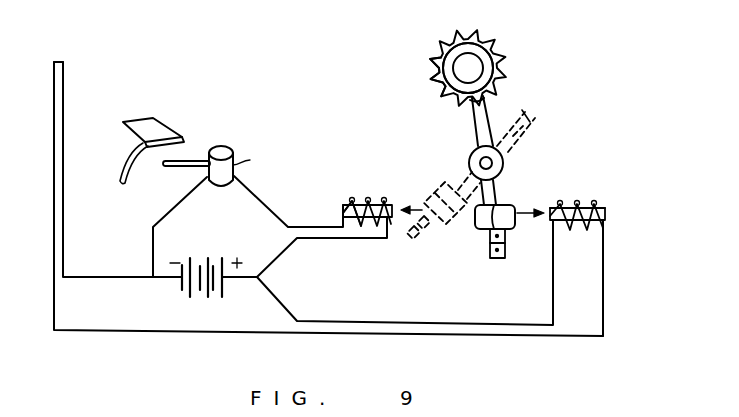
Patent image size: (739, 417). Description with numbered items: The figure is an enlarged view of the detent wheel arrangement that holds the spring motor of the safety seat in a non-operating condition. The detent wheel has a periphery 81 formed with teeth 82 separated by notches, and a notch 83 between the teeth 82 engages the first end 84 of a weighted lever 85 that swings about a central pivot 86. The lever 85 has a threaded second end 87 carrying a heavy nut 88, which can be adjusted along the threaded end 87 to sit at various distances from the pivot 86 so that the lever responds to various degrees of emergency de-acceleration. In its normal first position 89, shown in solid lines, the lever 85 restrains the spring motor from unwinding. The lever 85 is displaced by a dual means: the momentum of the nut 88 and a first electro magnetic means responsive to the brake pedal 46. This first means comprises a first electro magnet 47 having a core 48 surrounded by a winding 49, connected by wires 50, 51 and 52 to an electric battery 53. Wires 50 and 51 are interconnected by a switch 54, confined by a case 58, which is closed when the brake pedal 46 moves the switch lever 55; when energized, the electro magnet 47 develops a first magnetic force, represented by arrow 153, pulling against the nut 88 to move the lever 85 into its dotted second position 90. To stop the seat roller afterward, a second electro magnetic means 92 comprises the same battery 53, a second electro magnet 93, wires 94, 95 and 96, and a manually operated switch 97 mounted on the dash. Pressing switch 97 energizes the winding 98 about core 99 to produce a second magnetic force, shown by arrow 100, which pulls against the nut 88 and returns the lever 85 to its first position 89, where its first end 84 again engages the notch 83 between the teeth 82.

The brake pedal 46 is at (165, 120).
The first electro magnet 47 is at (370, 203).
The core 48 is at (342, 212).
The winding 49 is at (351, 200).
The wire 50 is at (259, 201).
The wire 51 is at (153, 243).
The wire 52 is at (291, 247).
The electric battery 53 is at (184, 298).
The switch 54 is at (214, 150).
The switch lever 55 is at (190, 167).
The case 58 is at (250, 160).
The periphery 81 is at (475, 31).
The teeth 82 is at (434, 62).
The notch 83 is at (497, 46).
The first end 84 is at (527, 104).
The weighted lever 85 is at (471, 116).
The central pivot 86 is at (471, 163).
The threaded second end 87 is at (492, 248).
The heavy nut 88 is at (507, 204).
The first position 89 is at (470, 98).
The second position 90 is at (527, 130).
The second electro magnetic means 92 is at (455, 334).
The second electro magnet 93 is at (607, 210).
The wire 94 is at (506, 319).
The wire 95 is at (604, 303).
The wire 96 is at (65, 148).
The manually operated switch 97 is at (66, 84).
The winding 98 is at (585, 203).
The core 99 is at (606, 221).
The second magnetic force 100 is at (540, 198).
The first magnetic force 153 is at (420, 208).